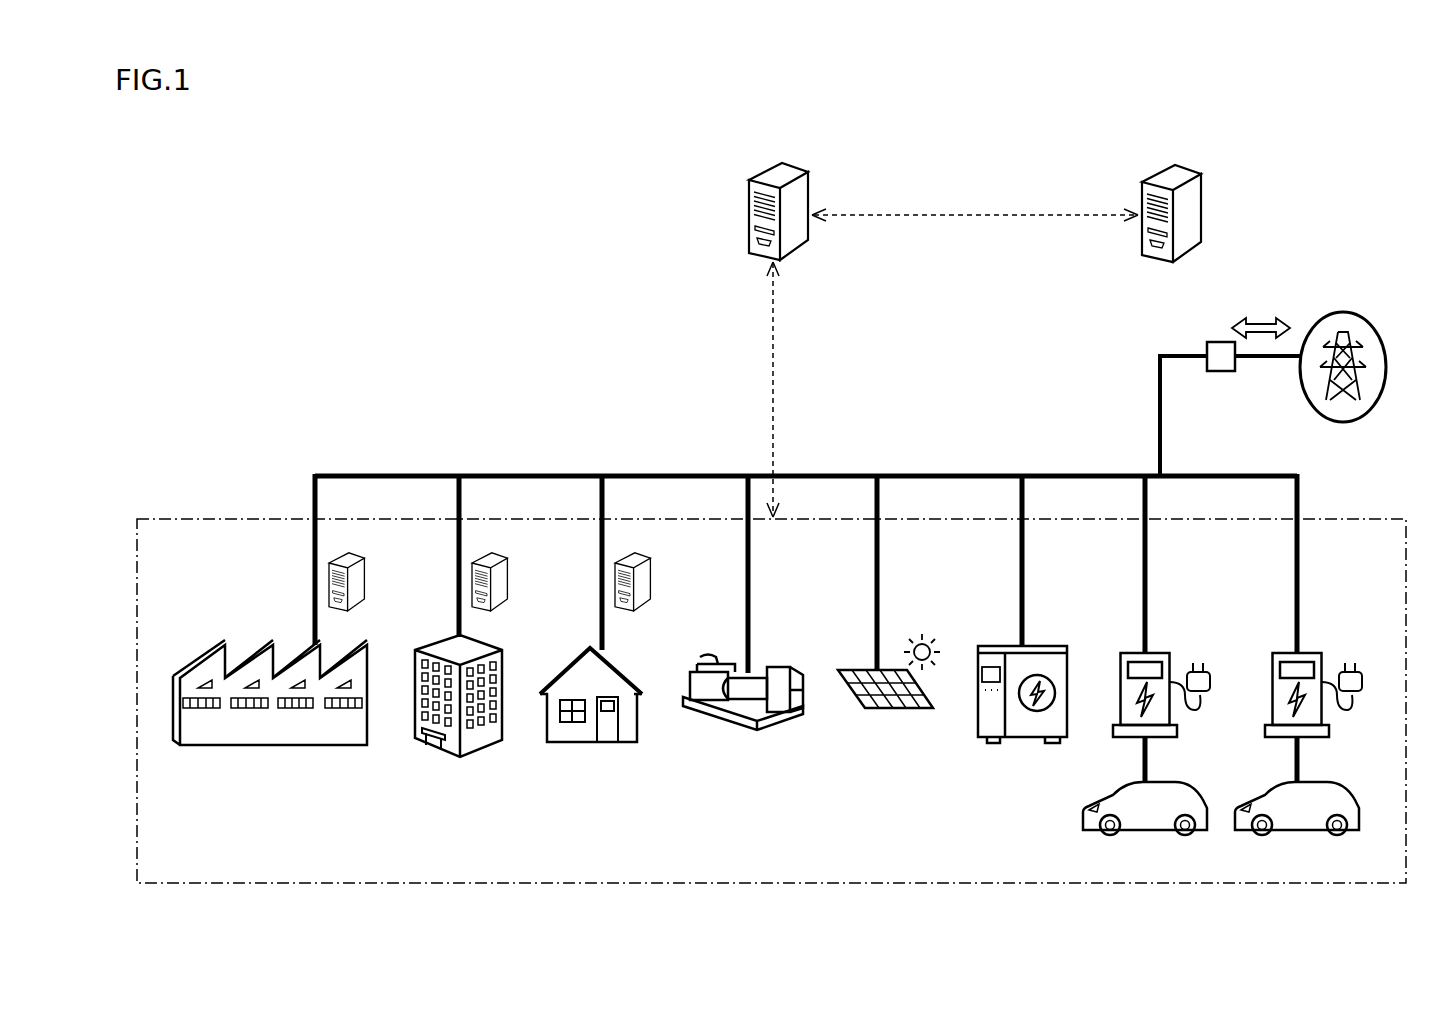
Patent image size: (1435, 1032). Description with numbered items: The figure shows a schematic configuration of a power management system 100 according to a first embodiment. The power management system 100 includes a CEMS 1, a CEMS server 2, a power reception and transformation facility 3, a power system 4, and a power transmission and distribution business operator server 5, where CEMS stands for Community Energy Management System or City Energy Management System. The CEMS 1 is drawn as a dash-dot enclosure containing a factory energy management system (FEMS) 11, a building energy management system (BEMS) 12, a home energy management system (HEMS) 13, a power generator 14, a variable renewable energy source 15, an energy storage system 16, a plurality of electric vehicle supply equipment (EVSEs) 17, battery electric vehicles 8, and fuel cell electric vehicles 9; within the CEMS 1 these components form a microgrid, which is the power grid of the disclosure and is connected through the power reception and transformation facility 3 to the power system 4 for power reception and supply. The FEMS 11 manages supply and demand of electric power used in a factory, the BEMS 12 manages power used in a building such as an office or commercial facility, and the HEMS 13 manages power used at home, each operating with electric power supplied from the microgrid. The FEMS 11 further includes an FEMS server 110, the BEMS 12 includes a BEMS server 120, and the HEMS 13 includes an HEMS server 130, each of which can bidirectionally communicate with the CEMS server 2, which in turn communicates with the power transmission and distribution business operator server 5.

The power management system 100 is at (223, 152).
The CEMS 1 is at (224, 518).
The CEMS server 2 is at (790, 172).
The power reception and transformation facility 3 is at (1237, 370).
The power system 4 is at (1380, 342).
The power transmission and distribution business operator server 5 is at (1180, 172).
The battery electric vehicle 8 is at (1160, 782).
The fuel cell electric vehicle 9 is at (1312, 782).
The factory energy management system 11 is at (219, 648).
The building energy management system 12 is at (482, 640).
The home energy management system 13 is at (622, 668).
The power generator 14 is at (778, 668).
The variable renewable energy source 15 is at (851, 670).
The energy storage system 16 is at (1043, 644).
The electric vehicle supply equipment 17 is at (1158, 652).
The FEMS server 110 is at (358, 557).
The BEMS server 120 is at (500, 557).
The HEMS server 130 is at (642, 557).